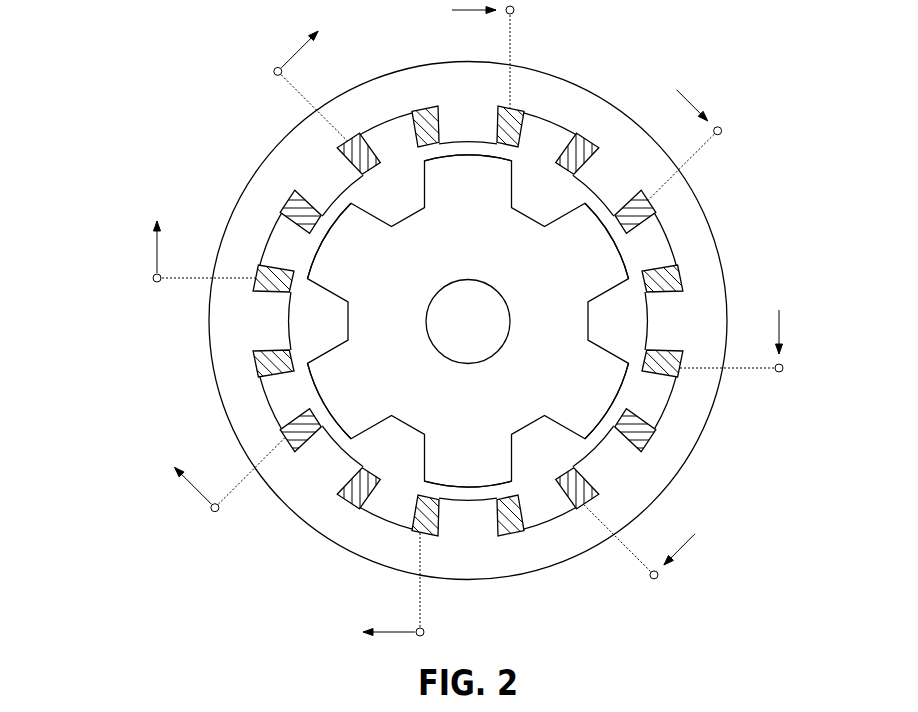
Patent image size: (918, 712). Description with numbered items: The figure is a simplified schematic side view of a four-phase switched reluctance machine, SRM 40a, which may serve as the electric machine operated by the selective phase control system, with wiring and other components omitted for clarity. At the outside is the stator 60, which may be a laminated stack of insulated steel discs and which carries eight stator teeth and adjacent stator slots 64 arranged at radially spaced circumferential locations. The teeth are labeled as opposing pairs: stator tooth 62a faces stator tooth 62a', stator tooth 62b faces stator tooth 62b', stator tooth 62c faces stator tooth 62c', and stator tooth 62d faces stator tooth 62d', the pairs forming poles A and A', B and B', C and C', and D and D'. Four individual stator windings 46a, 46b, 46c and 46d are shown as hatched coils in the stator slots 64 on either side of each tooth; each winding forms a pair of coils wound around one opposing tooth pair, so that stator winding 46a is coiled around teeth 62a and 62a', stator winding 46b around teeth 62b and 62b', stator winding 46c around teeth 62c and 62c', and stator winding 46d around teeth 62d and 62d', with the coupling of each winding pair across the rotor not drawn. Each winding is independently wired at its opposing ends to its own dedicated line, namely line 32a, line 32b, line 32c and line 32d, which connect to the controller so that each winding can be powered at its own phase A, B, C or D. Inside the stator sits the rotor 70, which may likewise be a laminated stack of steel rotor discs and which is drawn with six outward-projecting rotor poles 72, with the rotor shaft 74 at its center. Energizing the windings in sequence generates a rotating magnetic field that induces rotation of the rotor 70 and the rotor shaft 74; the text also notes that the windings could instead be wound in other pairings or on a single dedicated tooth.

The 4-phase 8/6 SRM 40a is at (212, 73).
The line 32a is at (419, 322).
The line 32b is at (428, 295).
The line 32c is at (470, 285).
The line 32d is at (505, 294).
The stator winding 46a is at (423, 107).
The stator winding 46b is at (599, 147).
The stator winding 46c is at (672, 297).
The stator winding 46d is at (302, 199).
The stator 60 is at (710, 224).
The stator tooth 62a is at (468, 106).
The stator tooth 62b is at (571, 190).
The stator tooth 62c is at (636, 321).
The stator tooth 62d is at (571, 454).
The stator tooth 62a' is at (475, 530).
The stator tooth 62b' is at (358, 455).
The stator tooth 62c' is at (298, 321).
The stator tooth 62d' is at (357, 193).
The stator slot 64 is at (387, 138).
The rotor 70 is at (456, 253).
The rotor tooth 72 is at (456, 190).
The rotor shaft 74 is at (456, 332).